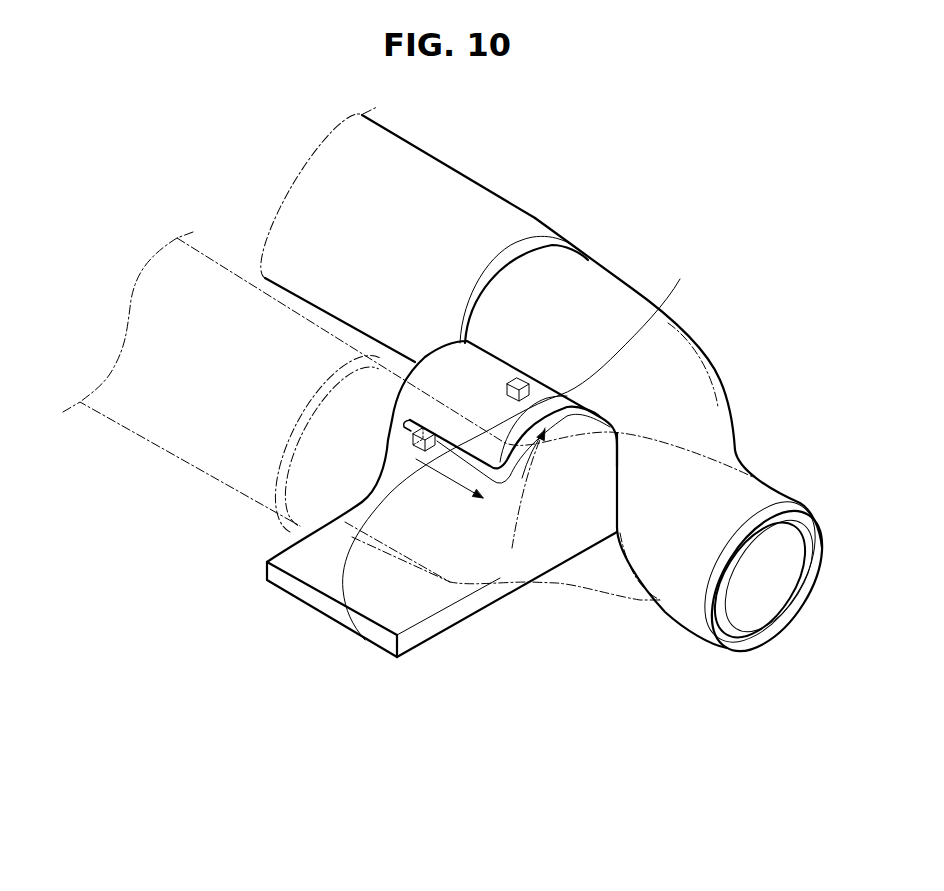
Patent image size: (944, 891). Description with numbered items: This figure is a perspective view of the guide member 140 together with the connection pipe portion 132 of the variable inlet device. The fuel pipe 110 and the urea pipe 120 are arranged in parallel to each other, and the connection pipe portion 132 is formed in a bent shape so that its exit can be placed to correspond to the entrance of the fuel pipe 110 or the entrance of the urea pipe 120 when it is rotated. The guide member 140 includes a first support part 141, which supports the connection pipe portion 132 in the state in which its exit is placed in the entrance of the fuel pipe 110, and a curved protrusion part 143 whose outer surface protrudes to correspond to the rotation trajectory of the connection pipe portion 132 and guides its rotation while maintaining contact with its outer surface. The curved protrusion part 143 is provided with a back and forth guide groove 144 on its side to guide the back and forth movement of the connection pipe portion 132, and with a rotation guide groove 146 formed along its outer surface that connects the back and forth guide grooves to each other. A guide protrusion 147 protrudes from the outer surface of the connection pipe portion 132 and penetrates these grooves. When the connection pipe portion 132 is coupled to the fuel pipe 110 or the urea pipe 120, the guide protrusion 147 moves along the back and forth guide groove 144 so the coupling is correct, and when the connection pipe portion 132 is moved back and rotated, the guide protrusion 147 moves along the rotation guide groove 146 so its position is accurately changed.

The fuel pipe 110 is at (128, 432).
The urea pipe 120 is at (437, 167).
The connection pipe portion 132 is at (605, 291).
The guide member 140 is at (451, 507).
The first support part 141 is at (512, 510).
The curved protrusion part 143 is at (449, 355).
The back and forth guide groove 144 is at (340, 570).
The rotation guide groove 146 is at (617, 360).
The guide protrusion 147 is at (413, 437).